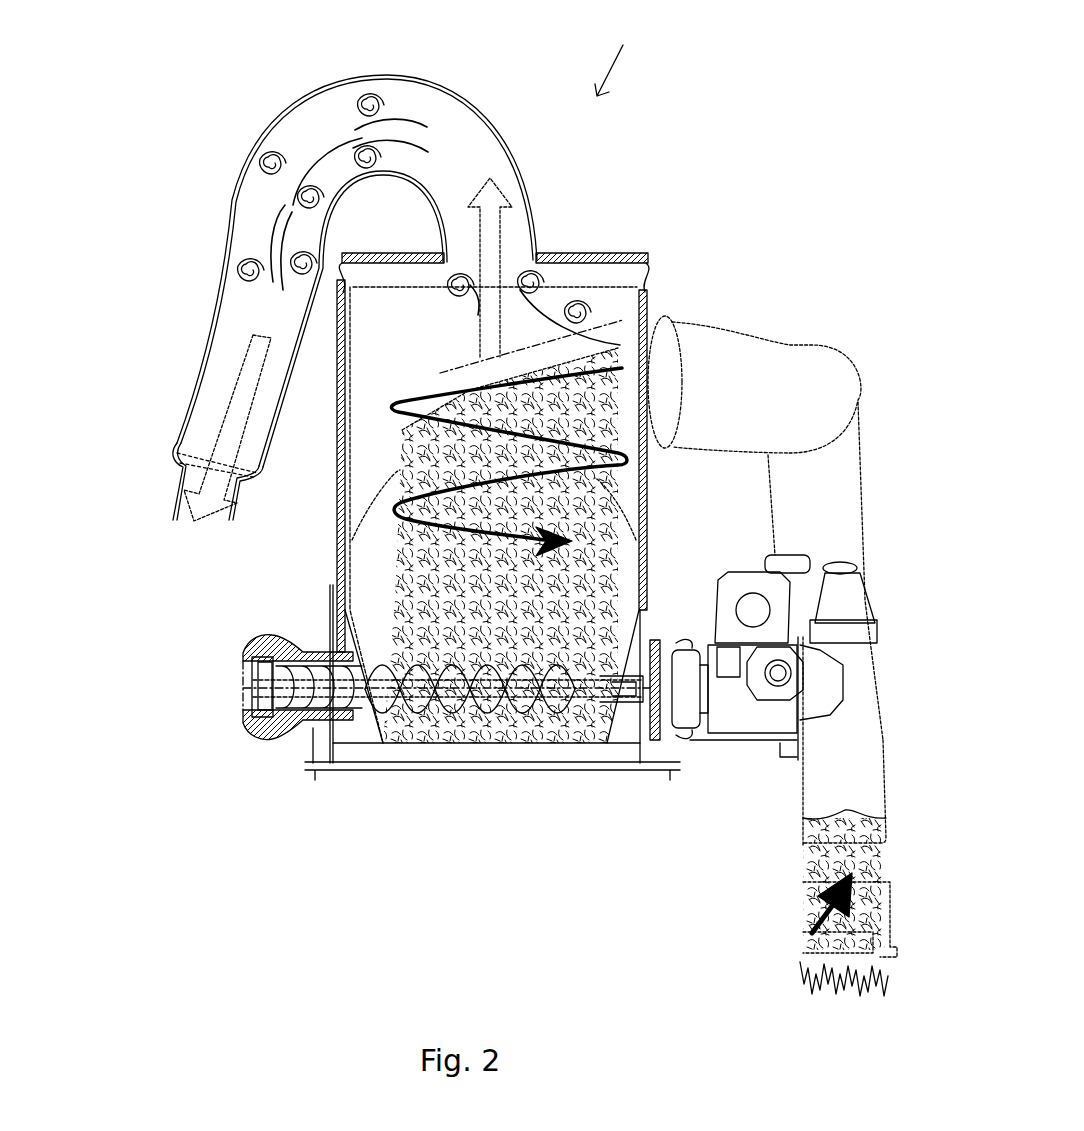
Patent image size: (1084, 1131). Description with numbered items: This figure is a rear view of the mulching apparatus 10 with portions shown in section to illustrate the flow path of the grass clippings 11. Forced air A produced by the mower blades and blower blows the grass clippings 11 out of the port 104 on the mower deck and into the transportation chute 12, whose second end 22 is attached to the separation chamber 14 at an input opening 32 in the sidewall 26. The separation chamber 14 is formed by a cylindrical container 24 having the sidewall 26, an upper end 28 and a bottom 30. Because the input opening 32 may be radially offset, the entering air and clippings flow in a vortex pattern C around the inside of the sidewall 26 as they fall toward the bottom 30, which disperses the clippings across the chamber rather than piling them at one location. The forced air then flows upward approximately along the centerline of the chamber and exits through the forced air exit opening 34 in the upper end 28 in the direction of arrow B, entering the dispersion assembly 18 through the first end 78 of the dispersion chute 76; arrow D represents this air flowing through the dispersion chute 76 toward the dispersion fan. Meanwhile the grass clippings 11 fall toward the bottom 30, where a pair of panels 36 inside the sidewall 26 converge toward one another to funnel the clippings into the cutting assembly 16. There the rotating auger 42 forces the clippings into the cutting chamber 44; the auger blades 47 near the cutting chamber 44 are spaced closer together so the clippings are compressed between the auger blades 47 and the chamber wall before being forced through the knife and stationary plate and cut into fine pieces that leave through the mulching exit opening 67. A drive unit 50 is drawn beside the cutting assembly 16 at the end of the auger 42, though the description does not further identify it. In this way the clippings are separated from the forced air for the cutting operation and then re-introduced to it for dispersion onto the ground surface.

The mulching apparatus 10 is at (623, 50).
The grass clippings 11 is at (845, 848).
The transportation chute 12 is at (792, 395).
The separation chamber 14 is at (650, 437).
The cutting assembly 16 is at (244, 630).
The dispersion assembly 18 is at (173, 312).
The second end 22 is at (712, 350).
The cylindrical container 24 is at (336, 445).
The sidewall 26 is at (336, 460).
The upper end 28 is at (625, 257).
The bottom 30 is at (580, 758).
The input opening 32 is at (620, 325).
The forced air exit opening 34 is at (470, 265).
The panels 36 is at (618, 545).
The auger 42 is at (485, 695).
The cutting chamber 44 is at (334, 707).
The auger blades 47 is at (340, 672).
The engine 50 is at (782, 677).
The mulching exit opening 67 is at (243, 712).
The dispersion chute 76 is at (240, 230).
The first end 78 is at (540, 258).
The port 104 is at (863, 910).
The forced air A is at (835, 880).
The forced air exiting the separation chamber B is at (488, 245).
The vortex pattern C is at (370, 527).
The forced air flowing through the dispersion chute D is at (245, 390).